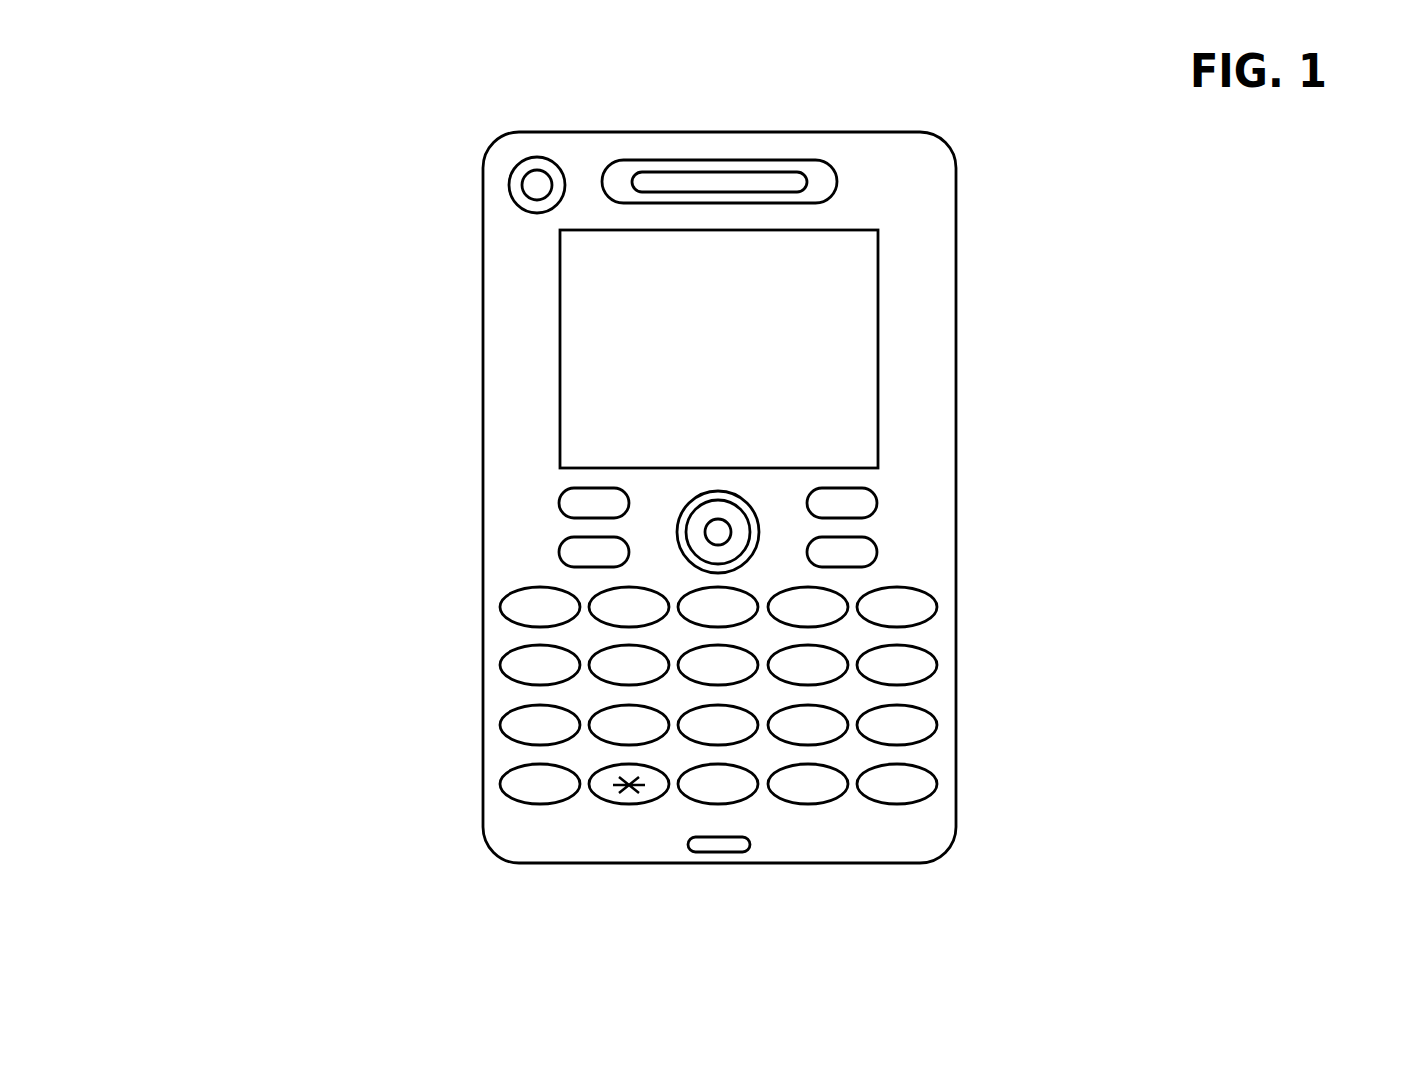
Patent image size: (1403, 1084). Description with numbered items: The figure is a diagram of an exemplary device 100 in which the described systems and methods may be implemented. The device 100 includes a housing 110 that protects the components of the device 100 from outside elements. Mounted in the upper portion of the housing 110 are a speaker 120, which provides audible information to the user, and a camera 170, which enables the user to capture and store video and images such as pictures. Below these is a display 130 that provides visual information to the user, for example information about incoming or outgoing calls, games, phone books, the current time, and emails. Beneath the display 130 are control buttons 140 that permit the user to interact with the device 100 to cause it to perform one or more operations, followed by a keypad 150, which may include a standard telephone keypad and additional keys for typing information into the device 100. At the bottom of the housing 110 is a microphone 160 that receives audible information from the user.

The device 100 is at (312, 90).
The housing 110 is at (484, 497).
The speaker 120 is at (718, 160).
The display 130 is at (878, 347).
The control buttons 140 is at (895, 478).
The keypad 150 is at (917, 822).
The microphone 160 is at (722, 852).
The camera 170 is at (510, 175).